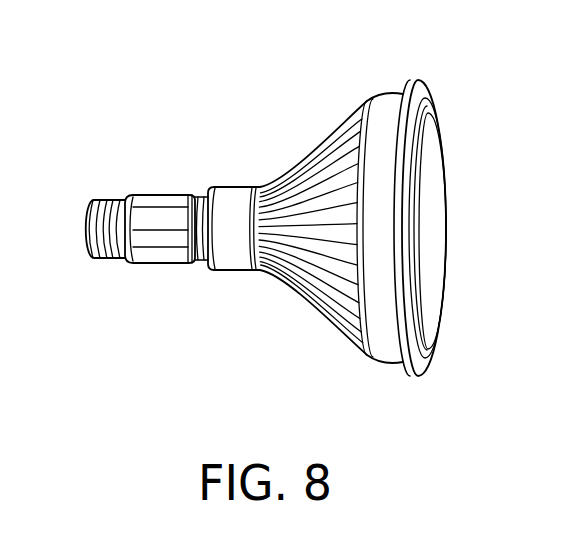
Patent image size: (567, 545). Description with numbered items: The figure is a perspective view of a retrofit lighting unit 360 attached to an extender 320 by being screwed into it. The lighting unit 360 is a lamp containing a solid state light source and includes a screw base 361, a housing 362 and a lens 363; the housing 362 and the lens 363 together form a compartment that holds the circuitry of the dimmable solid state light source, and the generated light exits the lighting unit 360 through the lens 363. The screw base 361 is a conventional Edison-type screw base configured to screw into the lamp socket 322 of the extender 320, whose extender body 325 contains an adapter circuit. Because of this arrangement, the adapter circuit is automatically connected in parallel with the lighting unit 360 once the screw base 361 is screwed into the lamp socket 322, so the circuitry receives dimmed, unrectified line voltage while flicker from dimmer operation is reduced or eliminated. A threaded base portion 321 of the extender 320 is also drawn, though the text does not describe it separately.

The extender 320 is at (97, 112).
The threaded screw base 321 is at (118, 200).
The lamp socket 322 is at (205, 196).
The extender body 325 is at (157, 256).
The retrofit lighting unit 360 is at (308, 97).
The screw base 361 is at (212, 270).
The housing 362 is at (293, 290).
The lens 363 is at (444, 217).